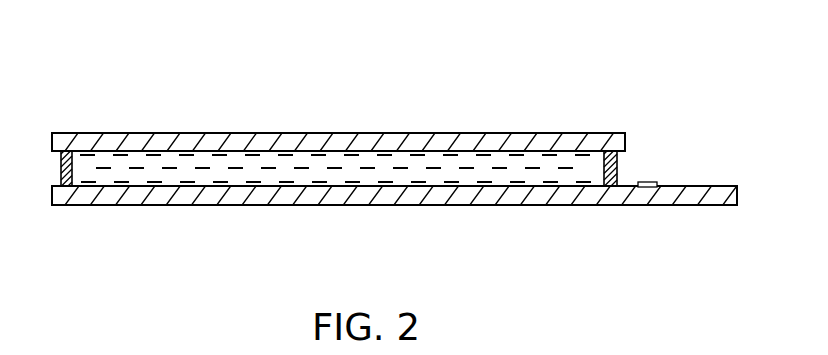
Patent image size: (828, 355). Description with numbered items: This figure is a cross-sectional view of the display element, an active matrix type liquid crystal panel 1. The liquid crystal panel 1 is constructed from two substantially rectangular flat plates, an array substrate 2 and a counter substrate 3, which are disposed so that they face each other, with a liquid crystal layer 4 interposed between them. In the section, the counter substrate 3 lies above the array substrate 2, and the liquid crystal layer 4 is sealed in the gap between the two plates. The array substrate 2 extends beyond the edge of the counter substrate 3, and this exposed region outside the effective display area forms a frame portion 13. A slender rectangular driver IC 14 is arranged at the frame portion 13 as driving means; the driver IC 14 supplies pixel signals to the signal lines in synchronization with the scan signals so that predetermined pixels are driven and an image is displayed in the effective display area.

The liquid crystal panel 1 is at (375, 75).
The array substrate 2 is at (312, 224).
The counter substrate 3 is at (255, 133).
The liquid crystal layer 4 is at (403, 178).
The frame portion 13 is at (737, 128).
The driver IC 14 is at (647, 187).